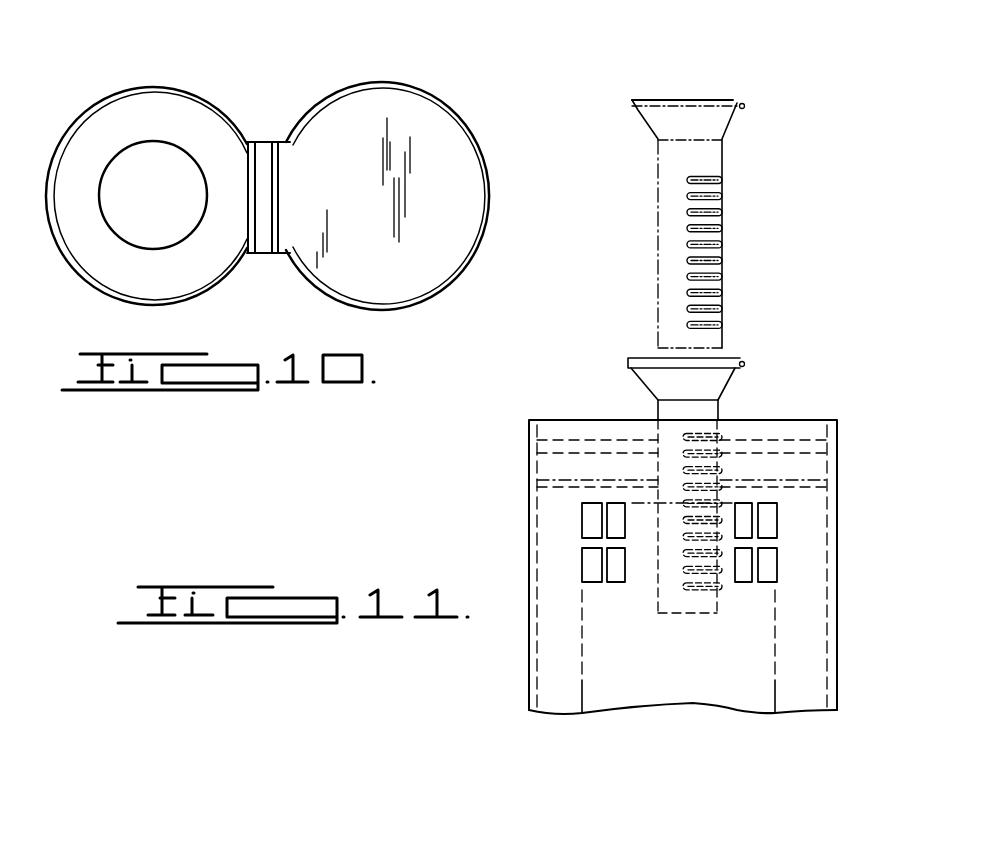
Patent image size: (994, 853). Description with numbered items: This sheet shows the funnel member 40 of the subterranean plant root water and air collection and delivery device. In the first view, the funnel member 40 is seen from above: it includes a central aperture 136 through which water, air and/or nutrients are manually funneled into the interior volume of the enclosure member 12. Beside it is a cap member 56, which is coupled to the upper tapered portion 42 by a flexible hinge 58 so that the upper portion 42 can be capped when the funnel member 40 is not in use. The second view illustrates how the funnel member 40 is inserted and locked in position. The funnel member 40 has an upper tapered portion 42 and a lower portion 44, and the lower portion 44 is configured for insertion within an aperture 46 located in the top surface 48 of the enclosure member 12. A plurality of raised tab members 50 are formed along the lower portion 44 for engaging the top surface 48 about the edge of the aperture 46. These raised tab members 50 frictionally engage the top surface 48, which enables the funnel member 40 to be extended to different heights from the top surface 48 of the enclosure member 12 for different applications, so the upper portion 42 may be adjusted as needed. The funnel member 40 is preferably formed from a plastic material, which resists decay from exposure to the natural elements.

In FIG. 11, the enclosure member 12 is at (837, 437).
In FIG. 10, the funnel member 40 is at (267, 161).
In FIG. 11, the funnel member 40 is at (688, 371).
In FIG. 10, the upper tapered portion 42 is at (213, 290).
In FIG. 11, the upper tapered portion 42 is at (632, 117).
In FIG. 11, the lower portion 44 is at (667, 223).
In FIG. 11, the aperture 46 is at (651, 471).
In FIG. 11, the top surface 48 is at (781, 480).
In FIG. 11, the raised tab members 50 is at (722, 275).
In FIG. 10, the cap member 56 is at (413, 90).
In FIG. 10, the flexible hinge 58 is at (261, 141).
In FIG. 10, the central aperture 136 is at (160, 168).